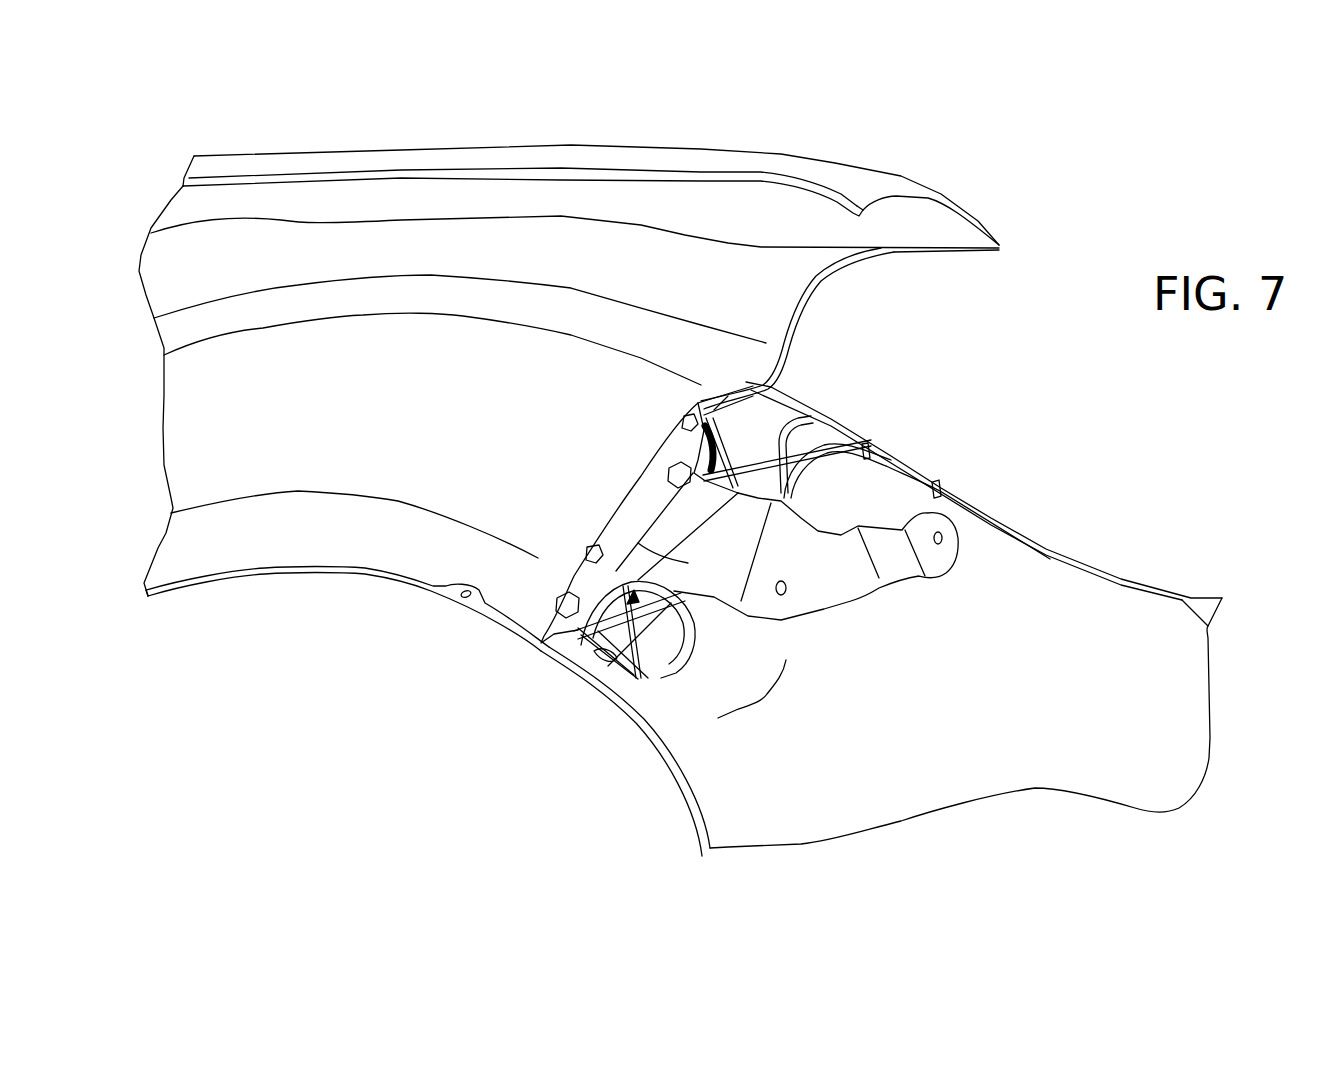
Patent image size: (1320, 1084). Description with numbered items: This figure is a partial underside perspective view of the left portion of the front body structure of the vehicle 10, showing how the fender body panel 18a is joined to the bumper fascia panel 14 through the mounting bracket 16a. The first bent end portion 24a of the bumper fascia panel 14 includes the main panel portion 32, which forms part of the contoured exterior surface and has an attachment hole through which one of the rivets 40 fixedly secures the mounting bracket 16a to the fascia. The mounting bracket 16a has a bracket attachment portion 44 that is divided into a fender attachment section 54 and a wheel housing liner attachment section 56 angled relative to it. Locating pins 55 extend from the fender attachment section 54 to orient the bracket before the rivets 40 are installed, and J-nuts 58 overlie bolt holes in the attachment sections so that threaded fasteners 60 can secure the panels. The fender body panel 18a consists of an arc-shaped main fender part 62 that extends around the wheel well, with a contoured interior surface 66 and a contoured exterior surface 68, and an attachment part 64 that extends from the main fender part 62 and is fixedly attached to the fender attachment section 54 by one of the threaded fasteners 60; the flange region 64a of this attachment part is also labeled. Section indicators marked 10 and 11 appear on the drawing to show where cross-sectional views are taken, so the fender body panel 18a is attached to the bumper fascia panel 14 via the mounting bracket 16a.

The automotive vehicle 10 is at (740, 400).
The section line 11- 11 is at (716, 400).
The bumper fascia panel 14 is at (1048, 510).
The mounting bracket 16a is at (562, 660).
The fender body panel 18a is at (973, 210).
The first bent end portion 24a is at (896, 800).
The main panel portion 32 is at (922, 708).
The rivet 40 is at (853, 463).
The bracket attachment portion 44 is at (680, 658).
The fender attachment section 54 is at (668, 647).
The locating pin 55 is at (698, 404).
The wheel housing liner attachment section 56 is at (648, 690).
The J-nut 58 is at (605, 668).
The threaded fastener 60 is at (681, 468).
The main fender part 62 is at (566, 400).
The attachment part 64 is at (641, 500).
The bracket flange 64a is at (688, 565).
The contoured interior surface 66 is at (927, 222).
The contoured exterior surface 68 is at (863, 183).